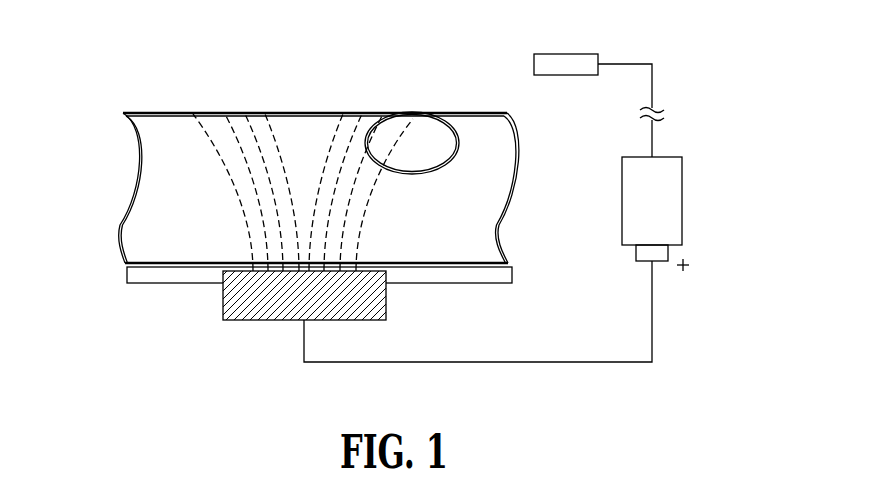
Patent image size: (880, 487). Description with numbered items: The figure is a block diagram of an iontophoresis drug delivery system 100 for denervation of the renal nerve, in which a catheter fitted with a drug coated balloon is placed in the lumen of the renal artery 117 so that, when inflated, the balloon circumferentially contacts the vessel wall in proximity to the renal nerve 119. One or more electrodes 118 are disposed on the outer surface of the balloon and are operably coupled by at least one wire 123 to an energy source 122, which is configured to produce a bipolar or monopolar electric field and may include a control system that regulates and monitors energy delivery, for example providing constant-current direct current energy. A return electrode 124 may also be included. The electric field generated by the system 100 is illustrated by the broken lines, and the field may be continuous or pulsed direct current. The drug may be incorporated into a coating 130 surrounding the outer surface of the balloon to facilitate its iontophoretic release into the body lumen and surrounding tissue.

The iontophoresis drug delivery system 100 is at (158, 28).
The renal artery 117 is at (150, 112).
The electrode 118 is at (258, 322).
The renal nerve 119 is at (417, 122).
The energy source 122 is at (682, 200).
The wire 123 is at (653, 318).
The return electrode 124 is at (567, 53).
The coating 130 is at (127, 263).